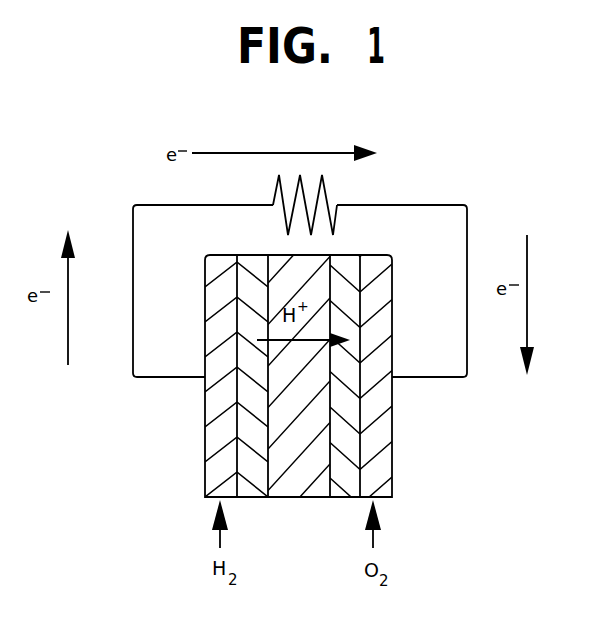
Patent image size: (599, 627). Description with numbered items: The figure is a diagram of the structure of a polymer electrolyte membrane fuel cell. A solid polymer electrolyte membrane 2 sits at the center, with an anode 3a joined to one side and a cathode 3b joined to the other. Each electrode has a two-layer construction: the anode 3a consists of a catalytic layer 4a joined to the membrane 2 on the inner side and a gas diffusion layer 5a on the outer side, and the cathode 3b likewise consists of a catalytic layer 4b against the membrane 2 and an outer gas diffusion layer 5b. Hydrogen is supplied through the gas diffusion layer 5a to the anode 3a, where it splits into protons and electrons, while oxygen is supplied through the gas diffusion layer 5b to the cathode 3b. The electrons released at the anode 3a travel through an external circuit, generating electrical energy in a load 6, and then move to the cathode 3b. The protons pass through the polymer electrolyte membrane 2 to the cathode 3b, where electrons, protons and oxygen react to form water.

The polymer electrolyte membrane 2 is at (292, 443).
The anode 3a is at (165, 359).
The cathode 3b is at (431, 363).
The catalytic layer 4a is at (250, 408).
The catalytic layer 4b is at (345, 443).
The gas diffusion layer 5a is at (213, 387).
The gas diffusion layer 5b is at (378, 417).
The load 6 is at (277, 180).